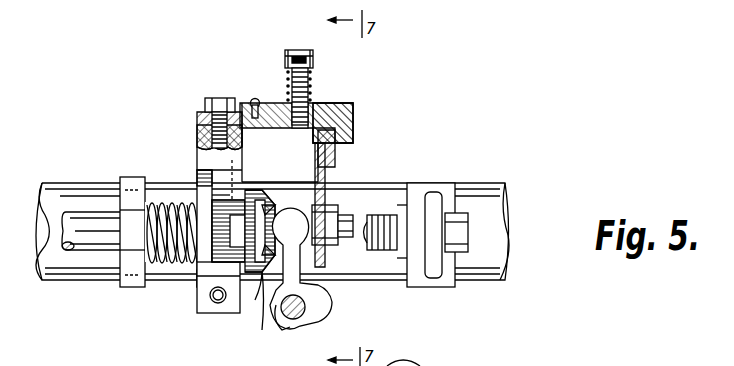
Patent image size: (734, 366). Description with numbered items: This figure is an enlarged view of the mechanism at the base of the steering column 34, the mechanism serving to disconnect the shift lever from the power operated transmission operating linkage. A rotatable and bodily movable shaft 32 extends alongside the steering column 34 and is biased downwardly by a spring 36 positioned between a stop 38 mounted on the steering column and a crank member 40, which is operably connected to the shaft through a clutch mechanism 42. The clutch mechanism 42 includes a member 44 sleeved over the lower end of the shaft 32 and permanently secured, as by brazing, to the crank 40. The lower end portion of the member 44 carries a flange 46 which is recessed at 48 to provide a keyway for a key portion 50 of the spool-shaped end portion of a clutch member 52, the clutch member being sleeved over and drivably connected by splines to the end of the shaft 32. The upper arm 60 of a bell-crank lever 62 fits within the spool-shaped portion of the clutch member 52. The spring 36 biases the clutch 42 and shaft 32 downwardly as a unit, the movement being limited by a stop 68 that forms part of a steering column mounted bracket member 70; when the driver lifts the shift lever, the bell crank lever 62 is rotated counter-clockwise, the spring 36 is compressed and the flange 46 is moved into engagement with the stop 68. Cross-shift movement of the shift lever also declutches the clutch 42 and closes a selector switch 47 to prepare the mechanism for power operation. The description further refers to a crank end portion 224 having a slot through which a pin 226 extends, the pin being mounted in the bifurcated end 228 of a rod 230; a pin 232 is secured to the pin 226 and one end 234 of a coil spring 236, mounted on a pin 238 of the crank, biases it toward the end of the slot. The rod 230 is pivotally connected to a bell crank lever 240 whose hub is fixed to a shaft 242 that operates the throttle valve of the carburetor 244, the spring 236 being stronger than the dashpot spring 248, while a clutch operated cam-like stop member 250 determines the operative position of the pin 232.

The shaft 32 is at (80, 218).
The steering column 34 is at (490, 190).
The spring 36 is at (167, 263).
The stop 38 is at (127, 185).
The crank member 40 is at (197, 180).
The clutch mechanism 42 is at (257, 300).
The member 44 is at (210, 270).
The flange 46 is at (250, 190).
The selector switch 47 is at (380, 215).
The recess 48 is at (280, 182).
The key portion 50 is at (274, 222).
The clutch member 52 is at (256, 300).
The upper arm 60 is at (315, 300).
The bell-crank lever 62 is at (322, 322).
The stop 68 is at (240, 170).
The bracket member 70 is at (198, 135).
The end portion 224 is at (345, 212).
The pin 226 is at (416, 192).
The bifurcated end 228 is at (198, 118).
The rod 230 is at (205, 104).
The pin 232 is at (253, 98).
The end of coil spring 234 is at (287, 85).
The coil spring 236 is at (290, 70).
The pin 238 is at (312, 103).
The bell crank lever 240 is at (354, 110).
The shaft 242 is at (328, 112).
The carburetor 244 is at (314, 146).
The dashpot spring 248 is at (336, 135).
The cam-like stop member 250 is at (336, 160).